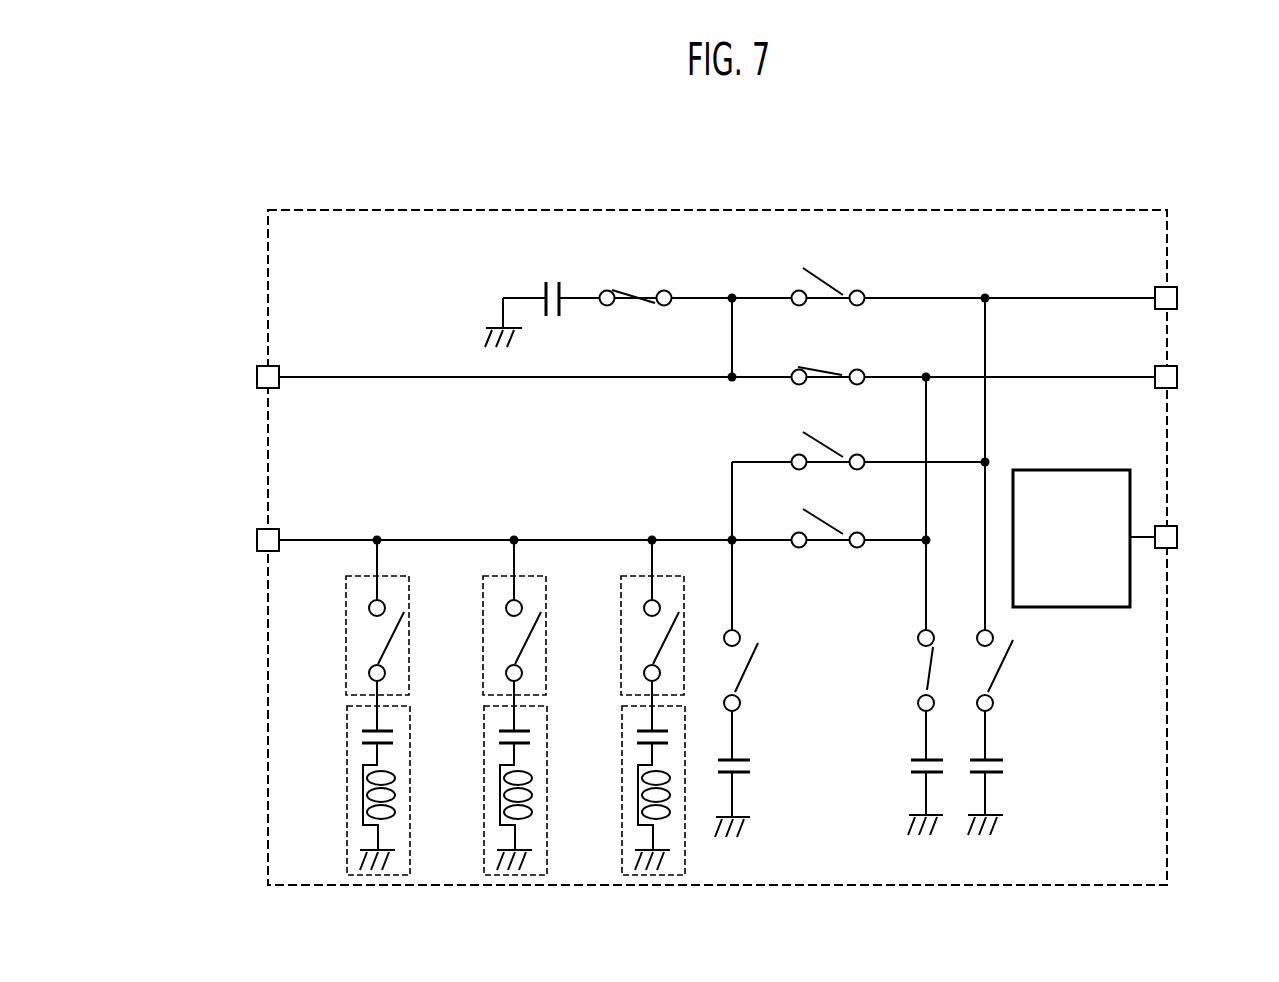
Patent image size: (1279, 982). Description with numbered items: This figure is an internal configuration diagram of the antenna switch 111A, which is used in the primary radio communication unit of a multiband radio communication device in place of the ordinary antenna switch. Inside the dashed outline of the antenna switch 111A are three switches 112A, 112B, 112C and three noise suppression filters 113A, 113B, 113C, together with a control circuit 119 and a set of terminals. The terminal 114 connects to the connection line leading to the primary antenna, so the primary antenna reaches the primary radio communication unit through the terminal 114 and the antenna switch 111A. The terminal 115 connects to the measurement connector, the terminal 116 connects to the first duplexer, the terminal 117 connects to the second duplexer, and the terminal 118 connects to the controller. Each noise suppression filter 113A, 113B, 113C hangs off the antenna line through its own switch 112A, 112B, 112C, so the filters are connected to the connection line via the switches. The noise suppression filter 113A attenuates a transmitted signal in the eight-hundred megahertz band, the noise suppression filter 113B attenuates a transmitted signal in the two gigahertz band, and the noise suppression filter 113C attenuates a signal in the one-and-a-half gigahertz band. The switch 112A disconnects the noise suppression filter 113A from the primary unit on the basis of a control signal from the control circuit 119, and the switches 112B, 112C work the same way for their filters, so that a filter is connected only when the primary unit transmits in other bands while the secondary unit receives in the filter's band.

The antenna switch 111A is at (822, 210).
The switch 112A is at (621, 640).
The switch 112B is at (483, 640).
The switch 112C is at (346, 640).
The noise suppression filter 113A is at (621, 783).
The noise suppression filter 113B is at (483, 783).
The noise suppression filter 113C is at (346, 783).
The terminal 114 is at (256, 540).
The terminal 115 is at (256, 377).
The terminal 116 is at (1178, 300).
The terminal 117 is at (1178, 379).
The terminal 118 is at (1178, 539).
The control circuit 119 is at (1075, 607).